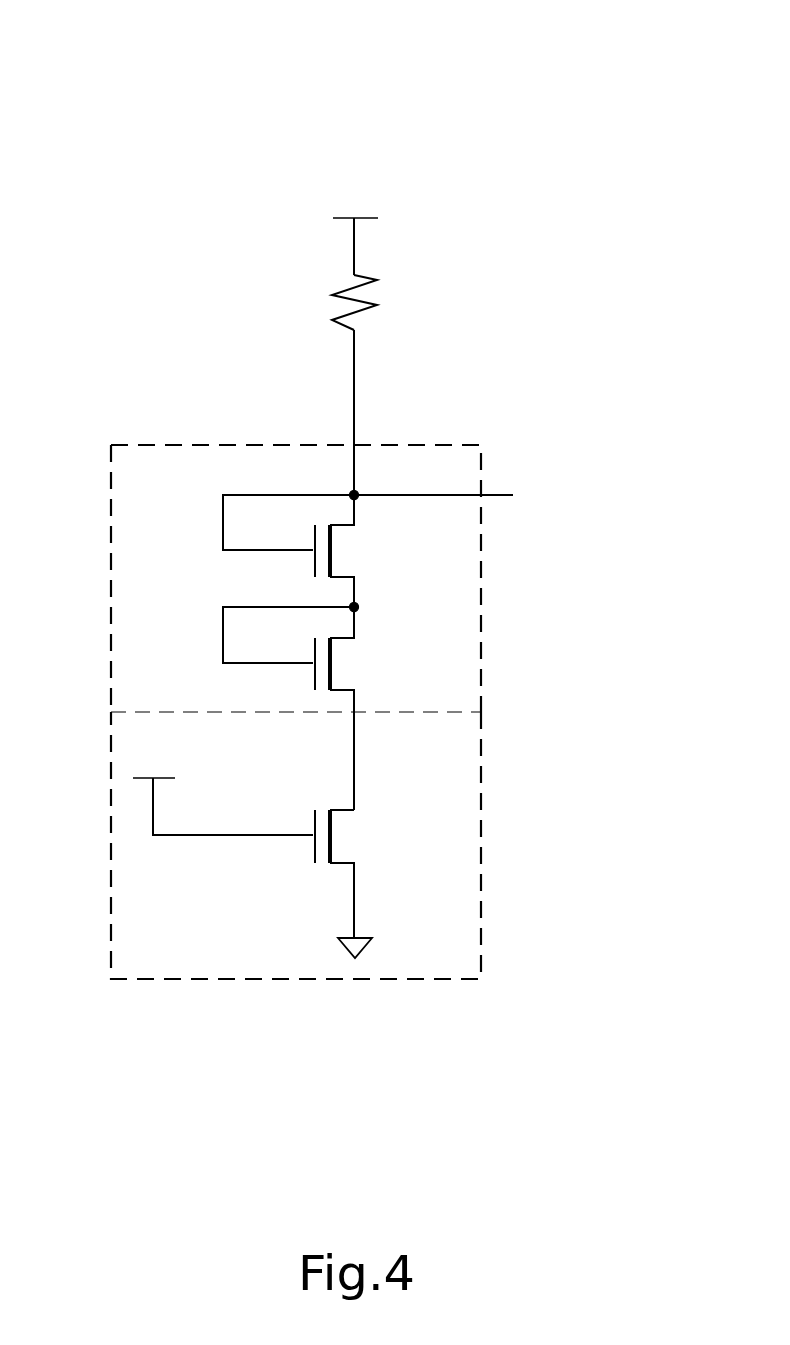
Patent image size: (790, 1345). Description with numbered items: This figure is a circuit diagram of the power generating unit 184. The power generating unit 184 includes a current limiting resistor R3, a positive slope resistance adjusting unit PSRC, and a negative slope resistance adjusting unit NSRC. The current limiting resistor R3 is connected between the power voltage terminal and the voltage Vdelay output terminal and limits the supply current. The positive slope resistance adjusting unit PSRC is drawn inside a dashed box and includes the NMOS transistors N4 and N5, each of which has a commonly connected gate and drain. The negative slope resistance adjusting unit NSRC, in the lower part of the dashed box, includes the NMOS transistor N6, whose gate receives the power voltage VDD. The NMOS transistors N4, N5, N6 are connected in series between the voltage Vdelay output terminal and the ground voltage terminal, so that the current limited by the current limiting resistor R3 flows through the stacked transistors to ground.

The power generating unit 184 is at (475, 78).
The current limiting resistor R3 is at (332, 302).
The NMOS transistor N4 is at (300, 551).
The NMOS transistor N5 is at (300, 708).
The NMOS transistor N6 is at (250, 848).
The positive slope resistance adjusting unit PSRC is at (481, 445).
The negative slope resistance adjusting unit NSRC is at (482, 850).